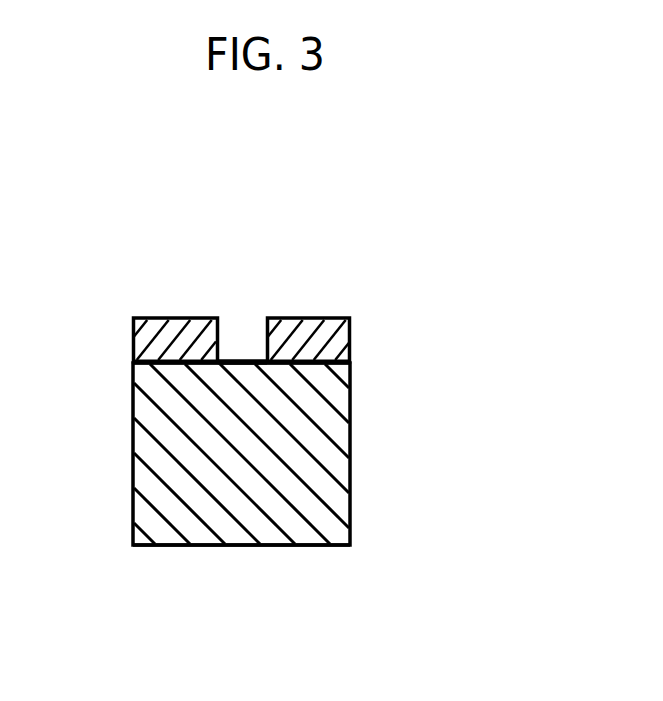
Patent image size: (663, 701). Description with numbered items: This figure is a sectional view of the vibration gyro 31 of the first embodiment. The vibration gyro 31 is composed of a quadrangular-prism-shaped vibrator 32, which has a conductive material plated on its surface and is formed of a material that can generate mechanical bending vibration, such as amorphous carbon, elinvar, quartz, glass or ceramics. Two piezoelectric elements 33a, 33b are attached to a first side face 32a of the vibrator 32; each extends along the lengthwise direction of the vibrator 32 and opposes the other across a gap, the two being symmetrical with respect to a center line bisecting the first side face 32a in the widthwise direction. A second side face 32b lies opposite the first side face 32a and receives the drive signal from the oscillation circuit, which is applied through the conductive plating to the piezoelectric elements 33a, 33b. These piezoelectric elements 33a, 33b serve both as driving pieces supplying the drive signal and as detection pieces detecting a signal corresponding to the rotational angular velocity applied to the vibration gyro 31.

The vibration gyro 31 is at (437, 331).
The vibrator 32 is at (308, 450).
The first side face 32a is at (232, 360).
The second side face 32b is at (243, 546).
The piezoelectric element 33a is at (171, 337).
The piezoelectric element 33b is at (323, 337).